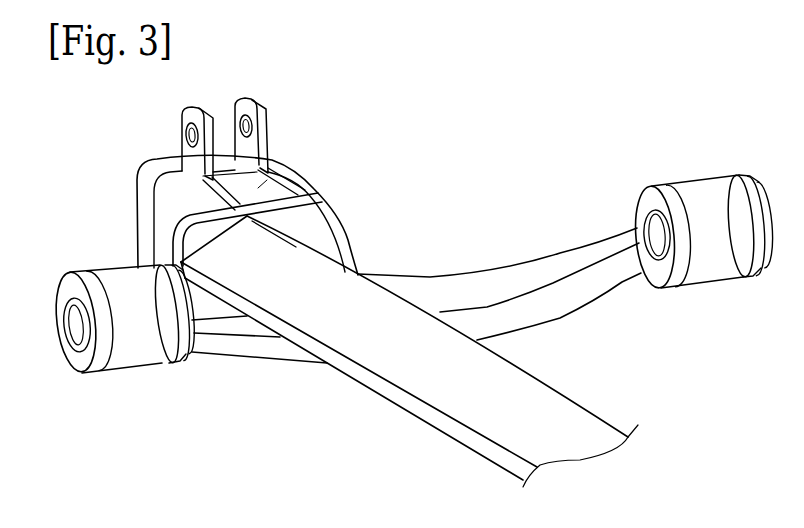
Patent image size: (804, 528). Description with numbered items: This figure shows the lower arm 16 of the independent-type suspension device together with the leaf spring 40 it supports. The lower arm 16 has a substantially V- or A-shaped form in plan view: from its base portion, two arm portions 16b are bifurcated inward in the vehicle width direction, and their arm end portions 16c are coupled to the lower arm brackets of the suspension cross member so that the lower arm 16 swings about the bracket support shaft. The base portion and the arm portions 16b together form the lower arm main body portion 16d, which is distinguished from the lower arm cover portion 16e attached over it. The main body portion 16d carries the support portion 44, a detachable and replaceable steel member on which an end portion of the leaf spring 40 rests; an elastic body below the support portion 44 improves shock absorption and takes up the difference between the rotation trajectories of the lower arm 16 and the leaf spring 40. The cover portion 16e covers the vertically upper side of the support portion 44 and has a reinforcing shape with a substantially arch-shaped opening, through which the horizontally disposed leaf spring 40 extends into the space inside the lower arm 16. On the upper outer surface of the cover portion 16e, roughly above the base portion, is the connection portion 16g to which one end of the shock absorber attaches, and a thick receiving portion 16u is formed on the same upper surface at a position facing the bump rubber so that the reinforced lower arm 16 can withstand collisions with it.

The lower arm 16 is at (431, 211).
The arm portions 16b is at (512, 265).
The arm end portions 16c is at (700, 190).
The lower arm main body portion 16d is at (586, 311).
The lower arm cover portion 16e is at (168, 215).
The connection portion 16g is at (265, 153).
The receiving portion 16u is at (270, 171).
The leaf spring 40 is at (555, 418).
The support portion 44 is at (283, 220).